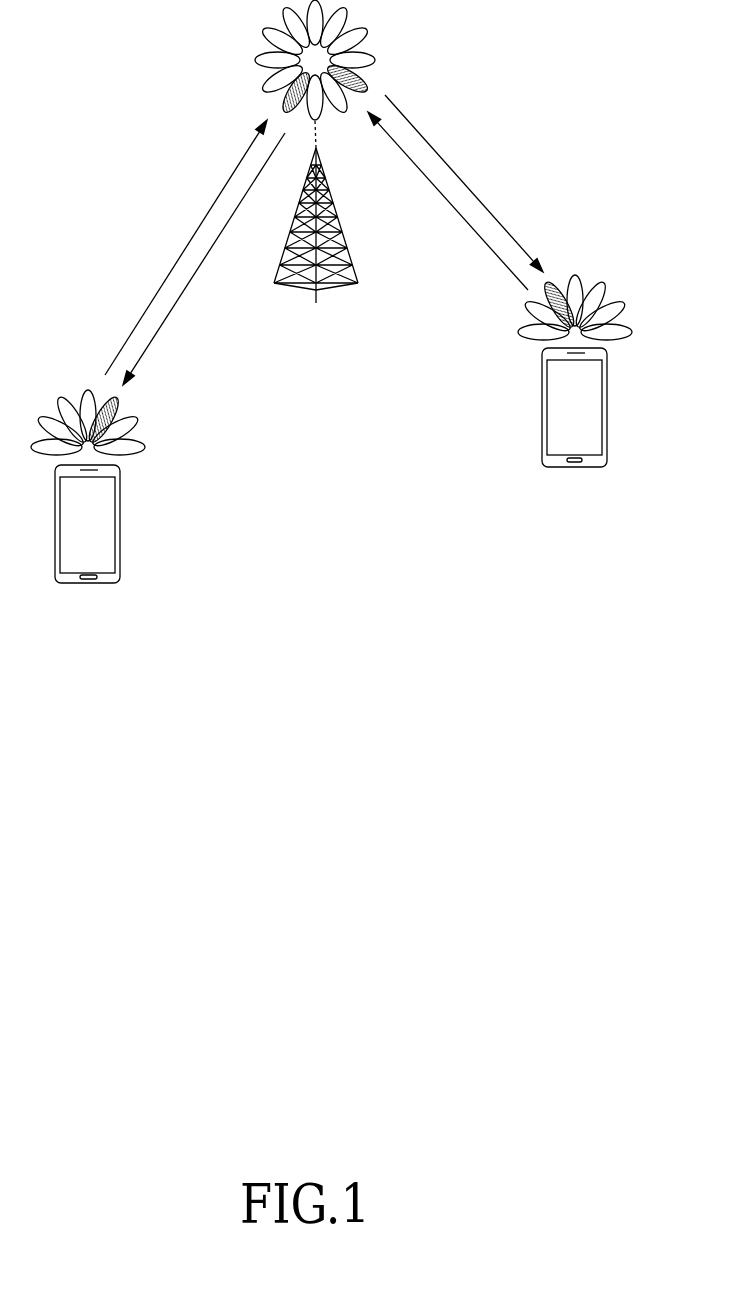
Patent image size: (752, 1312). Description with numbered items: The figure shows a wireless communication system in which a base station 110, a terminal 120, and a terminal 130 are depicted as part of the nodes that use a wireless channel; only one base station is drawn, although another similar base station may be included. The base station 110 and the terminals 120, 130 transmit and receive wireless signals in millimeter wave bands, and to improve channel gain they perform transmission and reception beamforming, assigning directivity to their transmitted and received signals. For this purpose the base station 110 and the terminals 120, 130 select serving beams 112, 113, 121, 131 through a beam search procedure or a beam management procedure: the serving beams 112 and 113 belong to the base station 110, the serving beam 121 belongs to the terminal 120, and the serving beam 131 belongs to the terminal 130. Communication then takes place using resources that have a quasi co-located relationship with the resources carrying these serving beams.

The base station 110 is at (335, 211).
The serving beam 112 is at (283, 106).
The serving beam 113 is at (377, 86).
The terminal 120 is at (121, 497).
The serving beam 121 is at (118, 404).
The terminal 130 is at (608, 380).
The serving beam 131 is at (546, 301).